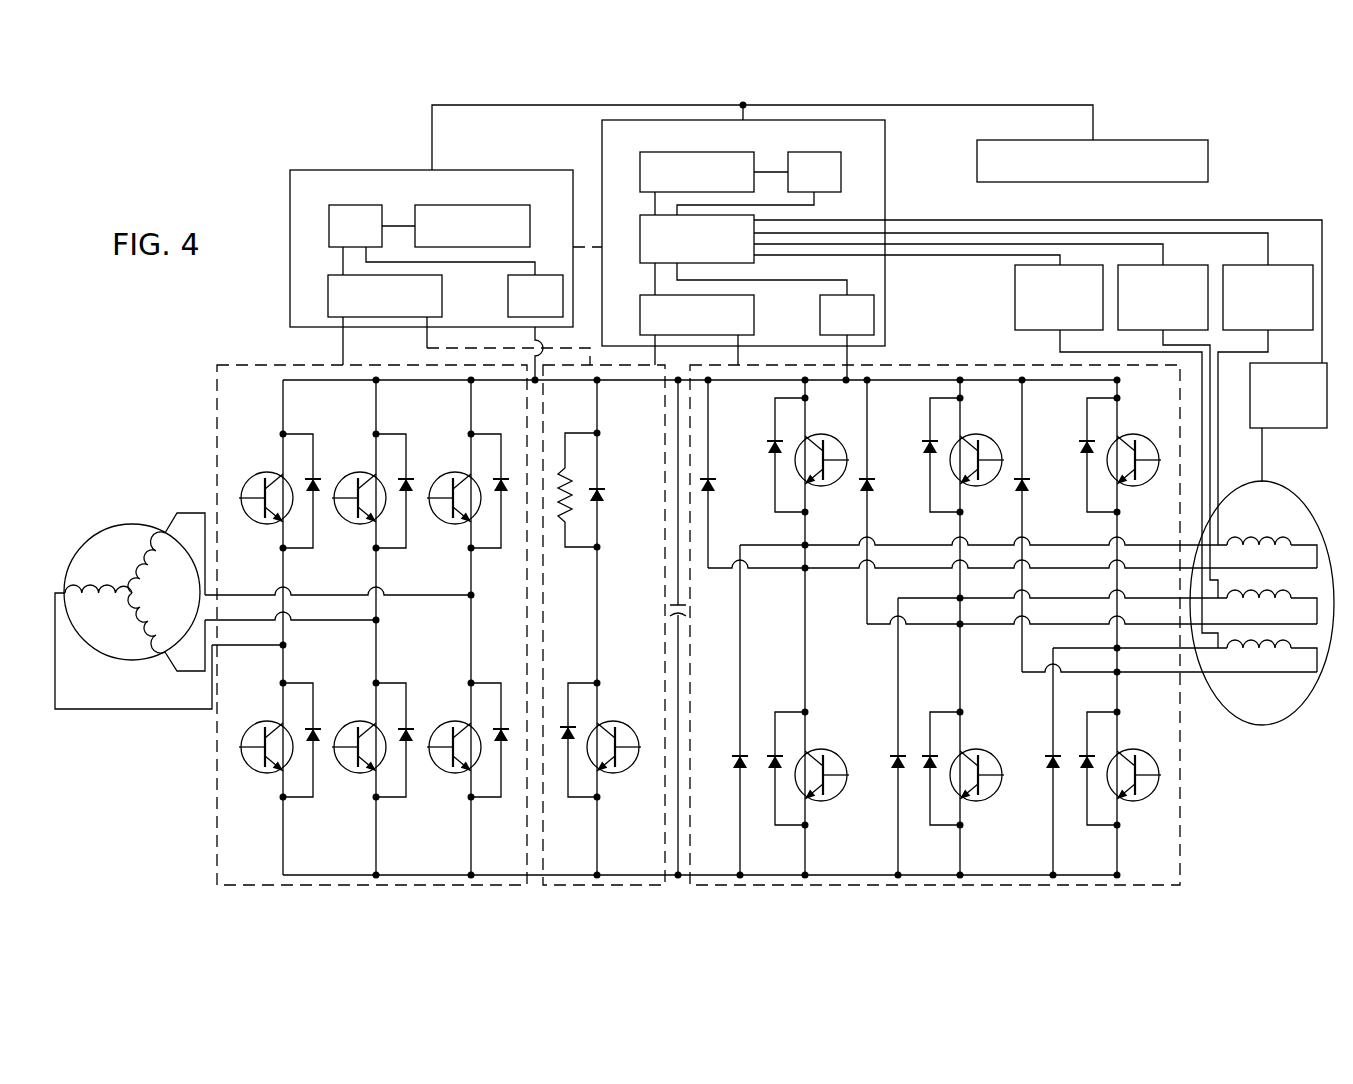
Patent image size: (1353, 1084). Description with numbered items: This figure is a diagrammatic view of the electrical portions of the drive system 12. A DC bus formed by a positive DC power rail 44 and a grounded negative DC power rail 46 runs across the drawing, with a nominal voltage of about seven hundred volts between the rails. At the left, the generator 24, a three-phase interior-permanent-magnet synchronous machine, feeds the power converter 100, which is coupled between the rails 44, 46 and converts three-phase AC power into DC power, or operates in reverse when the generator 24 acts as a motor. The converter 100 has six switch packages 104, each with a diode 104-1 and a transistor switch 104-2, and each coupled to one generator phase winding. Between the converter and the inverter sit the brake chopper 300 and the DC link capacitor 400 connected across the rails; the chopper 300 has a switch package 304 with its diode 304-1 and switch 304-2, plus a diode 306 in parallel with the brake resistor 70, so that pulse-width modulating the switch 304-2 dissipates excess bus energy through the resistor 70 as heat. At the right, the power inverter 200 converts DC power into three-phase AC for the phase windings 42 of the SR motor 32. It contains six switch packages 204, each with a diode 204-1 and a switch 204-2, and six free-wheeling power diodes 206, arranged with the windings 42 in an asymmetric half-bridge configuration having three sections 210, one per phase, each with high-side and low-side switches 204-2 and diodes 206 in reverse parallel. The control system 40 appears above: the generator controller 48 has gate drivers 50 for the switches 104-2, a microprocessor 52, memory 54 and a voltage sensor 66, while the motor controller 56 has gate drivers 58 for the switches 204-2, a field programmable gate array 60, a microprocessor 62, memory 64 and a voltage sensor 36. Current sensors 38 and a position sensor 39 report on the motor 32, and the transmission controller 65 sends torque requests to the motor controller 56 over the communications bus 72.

The drive system 12 is at (232, 195).
The generator 24 is at (116, 572).
The SR motor 32 is at (1225, 722).
The voltage sensor 36 is at (820, 318).
The current sensors 38 is at (1015, 285).
The position sensors 39 is at (1283, 428).
The control system 40 is at (320, 150).
The phase windings 42 is at (1240, 540).
The positive DC power rail 44 is at (300, 378).
The negative DC power rail 46 is at (318, 878).
The generator controller 48 is at (290, 300).
The gate drivers 50 is at (328, 298).
The microprocessor 52 is at (329, 219).
The memory 54 is at (530, 222).
The motor controller 56 is at (885, 205).
The gate drivers 58 is at (640, 316).
The field programmable gate array 60 is at (640, 240).
The microprocessor 62 is at (841, 172).
The memory 64 is at (640, 172).
The transmission controller 65 is at (1153, 140).
The voltage sensor 66 is at (508, 300).
The brake resistor 70 is at (565, 520).
The communications bus 72 is at (920, 105).
The power converter 100 is at (258, 394).
The switch packages 104 is at (322, 418).
The diode 104-1 is at (320, 478).
The transistor switch 104-2 is at (260, 525).
The power inverter 200 is at (1174, 400).
The switch packages 204 is at (782, 488).
The diode 204-1 is at (768, 446).
The switch 204-2 is at (836, 448).
The free-wheeling power diodes 206 is at (713, 486).
The sections 210 is at (1045, 365).
The brake chopper 300 is at (651, 412).
The switch package 304 is at (575, 770).
The diode 304-1 is at (562, 728).
The switch 304-2 is at (618, 775).
The diode 306 is at (604, 492).
The DC link capacitor 400 is at (672, 605).